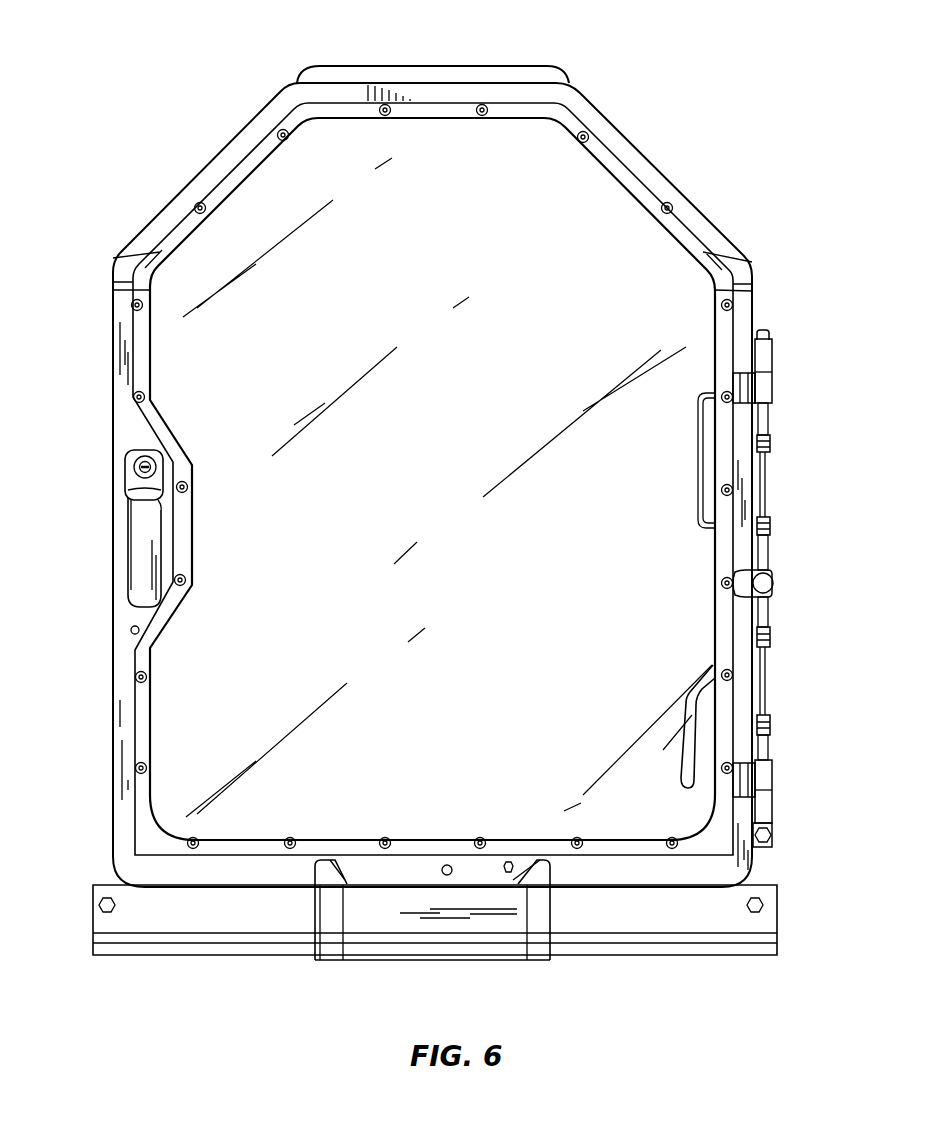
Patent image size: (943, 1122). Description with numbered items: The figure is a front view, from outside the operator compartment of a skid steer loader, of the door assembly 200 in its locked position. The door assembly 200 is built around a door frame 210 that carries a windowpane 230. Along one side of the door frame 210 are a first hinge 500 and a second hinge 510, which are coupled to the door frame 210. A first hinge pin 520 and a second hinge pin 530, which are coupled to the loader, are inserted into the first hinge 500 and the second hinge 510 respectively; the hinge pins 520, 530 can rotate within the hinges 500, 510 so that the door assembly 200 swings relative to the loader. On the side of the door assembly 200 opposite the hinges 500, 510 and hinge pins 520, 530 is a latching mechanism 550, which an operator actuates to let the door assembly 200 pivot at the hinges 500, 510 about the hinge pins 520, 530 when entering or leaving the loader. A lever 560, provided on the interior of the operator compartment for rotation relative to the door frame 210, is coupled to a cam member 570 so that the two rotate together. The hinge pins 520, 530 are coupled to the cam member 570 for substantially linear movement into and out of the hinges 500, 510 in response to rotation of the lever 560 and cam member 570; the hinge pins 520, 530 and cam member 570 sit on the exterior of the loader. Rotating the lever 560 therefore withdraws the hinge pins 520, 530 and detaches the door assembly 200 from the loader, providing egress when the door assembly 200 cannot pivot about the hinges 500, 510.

The door assembly 200 is at (697, 78).
The door frame 210 is at (681, 205).
The windowpane 230 is at (248, 228).
The first hinge 500 is at (770, 345).
The second hinge 510 is at (766, 810).
The first hinge pin 520 is at (766, 412).
The second hinge pin 530 is at (766, 757).
The latching mechanism 550 is at (98, 487).
The lever 560 is at (685, 778).
The cam member 570 is at (770, 580).